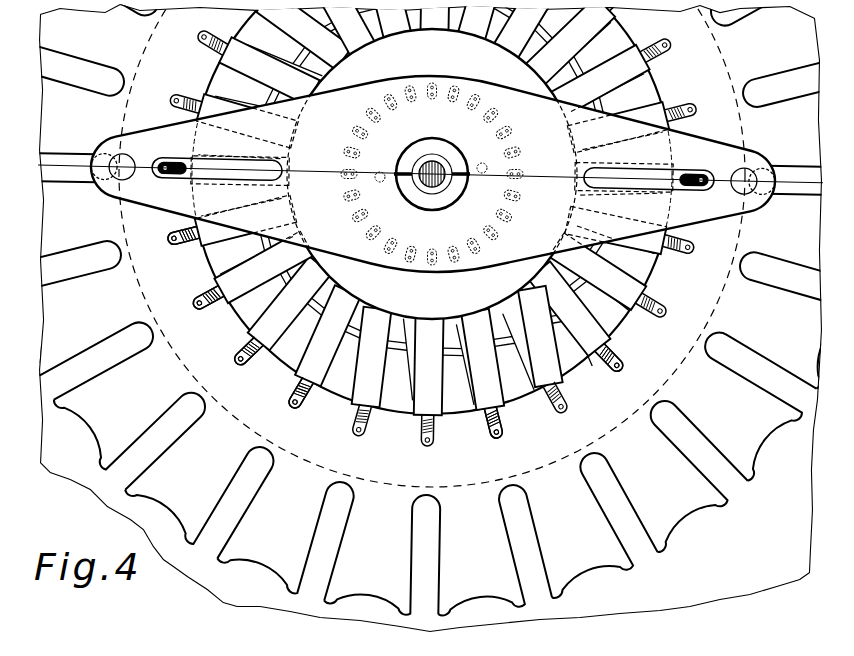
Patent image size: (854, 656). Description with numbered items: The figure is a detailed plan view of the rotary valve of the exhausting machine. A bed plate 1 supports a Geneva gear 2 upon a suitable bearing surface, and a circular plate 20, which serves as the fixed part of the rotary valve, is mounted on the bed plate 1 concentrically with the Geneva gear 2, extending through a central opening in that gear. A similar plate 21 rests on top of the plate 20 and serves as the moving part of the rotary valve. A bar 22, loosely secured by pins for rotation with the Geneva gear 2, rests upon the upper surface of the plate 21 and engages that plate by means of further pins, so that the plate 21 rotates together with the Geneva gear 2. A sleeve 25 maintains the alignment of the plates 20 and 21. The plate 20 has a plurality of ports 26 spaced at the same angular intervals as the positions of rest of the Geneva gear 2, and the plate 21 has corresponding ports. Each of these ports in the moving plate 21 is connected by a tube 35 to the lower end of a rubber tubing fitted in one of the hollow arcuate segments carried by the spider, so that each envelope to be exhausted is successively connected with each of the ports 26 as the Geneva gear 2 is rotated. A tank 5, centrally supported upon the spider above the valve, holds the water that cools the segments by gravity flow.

The bed plate 1 is at (672, 600).
The Geneva gear 2 is at (680, 497).
The tank 5 is at (40, 168).
The circular plate 20 is at (458, 364).
The plate 21 is at (414, 356).
The bar 22 is at (157, 140).
The sleeve 25 is at (432, 163).
The ports 26 is at (432, 174).
The tube 35 is at (409, 336).